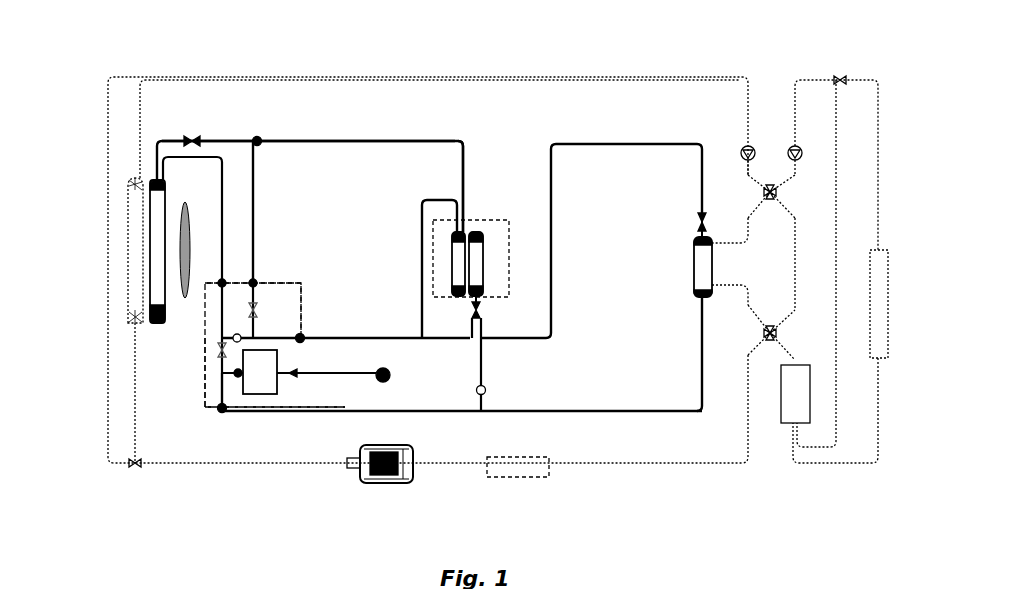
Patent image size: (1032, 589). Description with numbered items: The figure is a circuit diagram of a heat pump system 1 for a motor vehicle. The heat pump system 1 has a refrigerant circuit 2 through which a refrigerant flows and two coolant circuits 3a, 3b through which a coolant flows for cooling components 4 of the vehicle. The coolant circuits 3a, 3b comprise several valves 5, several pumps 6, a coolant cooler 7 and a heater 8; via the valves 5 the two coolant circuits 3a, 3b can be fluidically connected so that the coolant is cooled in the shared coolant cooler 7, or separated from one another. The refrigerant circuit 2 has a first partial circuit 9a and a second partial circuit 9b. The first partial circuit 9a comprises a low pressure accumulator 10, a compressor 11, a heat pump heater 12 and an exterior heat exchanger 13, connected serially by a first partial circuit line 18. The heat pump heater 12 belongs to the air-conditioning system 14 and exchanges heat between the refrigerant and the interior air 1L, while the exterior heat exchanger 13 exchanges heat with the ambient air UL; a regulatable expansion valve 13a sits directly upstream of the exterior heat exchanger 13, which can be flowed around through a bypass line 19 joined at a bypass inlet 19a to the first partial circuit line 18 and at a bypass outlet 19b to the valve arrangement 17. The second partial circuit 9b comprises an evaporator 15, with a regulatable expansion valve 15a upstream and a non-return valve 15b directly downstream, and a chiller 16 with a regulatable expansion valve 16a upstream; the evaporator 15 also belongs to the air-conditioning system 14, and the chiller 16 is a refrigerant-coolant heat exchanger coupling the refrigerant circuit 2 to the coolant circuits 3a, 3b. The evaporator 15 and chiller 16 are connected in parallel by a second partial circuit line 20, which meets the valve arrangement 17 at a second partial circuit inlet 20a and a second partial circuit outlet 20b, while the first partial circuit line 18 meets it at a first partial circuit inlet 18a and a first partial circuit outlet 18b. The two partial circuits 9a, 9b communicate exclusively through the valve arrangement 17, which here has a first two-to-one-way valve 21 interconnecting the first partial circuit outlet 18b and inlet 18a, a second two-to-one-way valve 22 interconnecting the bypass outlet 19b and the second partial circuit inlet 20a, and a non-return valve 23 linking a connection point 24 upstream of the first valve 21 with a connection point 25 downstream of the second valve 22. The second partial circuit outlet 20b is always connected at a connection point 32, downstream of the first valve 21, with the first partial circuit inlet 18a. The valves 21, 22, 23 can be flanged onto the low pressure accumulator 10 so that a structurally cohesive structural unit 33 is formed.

The heat pump system 1 is at (756, 26).
The interior air 1L is at (504, 246).
The refrigerant circuit 2 is at (370, 132).
The coolant circuit 3a is at (874, 64).
The coolant circuit 3b is at (654, 68).
The components 4 is at (385, 483).
The valves 5 is at (135, 466).
The pumps 6 is at (793, 146).
The coolant cooler 7 is at (135, 255).
The heater 8 is at (800, 403).
The first partial circuit 9a is at (325, 128).
The second partial circuit 9b is at (622, 130).
The low pressure accumulator 10 is at (270, 385).
The compressor 11 is at (383, 368).
The heat pump heater 12 is at (455, 262).
The exterior heat exchanger 13 is at (157, 216).
The regulatable expansion valve 13a is at (192, 140).
The air-conditioning system 14 is at (497, 212).
The evaporator 15 is at (475, 268).
The regulatable expansion valve 15a is at (480, 308).
The non-return valve 15b is at (486, 390).
The chiller 16 is at (703, 268).
The regulatable expansion valve 16a is at (700, 222).
The valve arrangement 17 is at (194, 386).
The first partial circuit line 18 is at (413, 140).
The first partial circuit inlet 18a is at (245, 365).
The first partial circuit outlet 18b is at (222, 283).
The bypass line 19 is at (258, 188).
The bypass inlet 19a is at (258, 138).
The bypass outlet 19b is at (254, 282).
The second partial circuit line 20 is at (604, 410).
The second partial circuit inlet 20a is at (300, 338).
The second partial circuit outlet 20b is at (218, 410).
The first 2/1-way valve 21 is at (204, 364).
The second 2/1-way valve 22 is at (256, 312).
The non-return valve 23 is at (236, 336).
The connection point 24 is at (222, 342).
The connection point 25 is at (256, 332).
The connection point 32 is at (222, 374).
The structural unit 33 is at (316, 396).
The ambient air UL is at (100, 298).